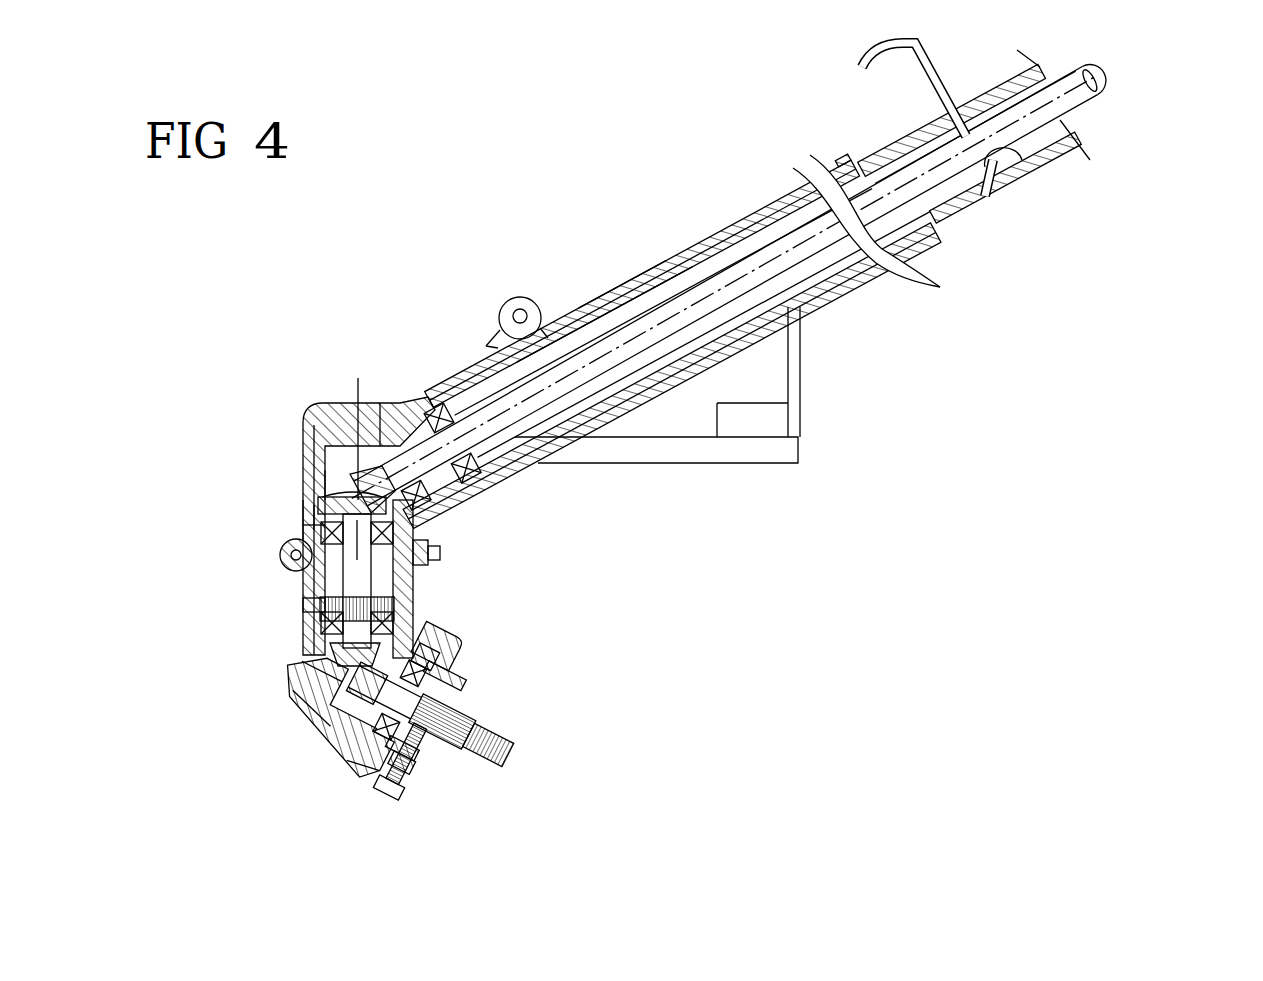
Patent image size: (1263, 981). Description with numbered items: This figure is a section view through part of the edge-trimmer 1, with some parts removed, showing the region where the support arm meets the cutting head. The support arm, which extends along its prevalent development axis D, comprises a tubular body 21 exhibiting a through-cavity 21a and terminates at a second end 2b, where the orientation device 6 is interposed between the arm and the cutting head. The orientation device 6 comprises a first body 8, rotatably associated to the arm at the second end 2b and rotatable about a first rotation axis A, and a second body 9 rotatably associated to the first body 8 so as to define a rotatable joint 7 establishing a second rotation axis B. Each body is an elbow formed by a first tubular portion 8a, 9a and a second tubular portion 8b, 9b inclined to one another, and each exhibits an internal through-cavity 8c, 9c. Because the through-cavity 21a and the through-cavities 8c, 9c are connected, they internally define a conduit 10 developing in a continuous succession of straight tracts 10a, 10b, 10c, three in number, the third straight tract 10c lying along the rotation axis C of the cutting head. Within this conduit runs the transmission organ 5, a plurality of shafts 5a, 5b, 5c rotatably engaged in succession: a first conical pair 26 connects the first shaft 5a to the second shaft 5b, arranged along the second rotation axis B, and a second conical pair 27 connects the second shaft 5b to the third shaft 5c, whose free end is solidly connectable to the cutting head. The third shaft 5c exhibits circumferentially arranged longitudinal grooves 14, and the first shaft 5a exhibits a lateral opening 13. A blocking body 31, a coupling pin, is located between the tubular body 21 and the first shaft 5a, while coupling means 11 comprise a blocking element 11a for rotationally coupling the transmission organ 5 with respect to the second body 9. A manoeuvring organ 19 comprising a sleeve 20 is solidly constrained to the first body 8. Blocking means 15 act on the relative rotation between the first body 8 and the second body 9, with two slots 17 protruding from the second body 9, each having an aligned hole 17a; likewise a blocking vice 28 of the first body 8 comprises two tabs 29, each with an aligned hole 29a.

The edge-trimmer 1 is at (765, 123).
The second end 2b is at (482, 482).
The transmission organ 5 is at (707, 270).
The first shaft 5a is at (745, 265).
The second shaft 5b is at (300, 628).
The third shaft 5c is at (472, 712).
The orientation device 6 is at (300, 517).
The rotatable joint 7 is at (300, 530).
The first body 8 is at (410, 385).
The first tubular portion 8a is at (450, 390).
The second tubular portion 8b is at (303, 515).
The internal through-cavity 8c is at (287, 490).
The second body 9 is at (313, 733).
The first tubular portion 9a is at (300, 630).
The second tubular portion 9b is at (352, 750).
The internal through-cavity 9c is at (287, 687).
The conduit 10 is at (612, 292).
The first straight tract 10a is at (830, 243).
The second straight tract 10b is at (382, 587).
The third straight tract 10c is at (462, 685).
The coupling means 11 is at (407, 797).
The blocking element 11a is at (413, 767).
The lateral opening 13 is at (1020, 160).
The longitudinal grooves 14 is at (460, 747).
The blocking means 15 is at (297, 608).
The slots 17 is at (290, 581).
The hole 17a is at (287, 560).
The manoeuvring organ 19 is at (808, 310).
The sleeve 20 is at (737, 340).
The tubular body 21 is at (645, 290).
The through-cavity 21a is at (626, 290).
The first conical pair 26 is at (303, 490).
The second conical pair 27 is at (300, 700).
The blocking vice 28 is at (530, 275).
The tabs 29 is at (490, 302).
The hole 29a is at (515, 316).
The blocking body 31 is at (882, 50).
The first rotation axis A is at (1107, 47).
The second rotation axis B is at (352, 380).
The rotation axis C is at (505, 757).
The prevalent development axis D is at (1093, 80).